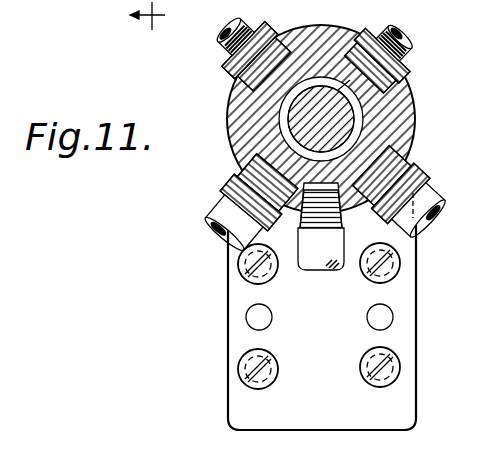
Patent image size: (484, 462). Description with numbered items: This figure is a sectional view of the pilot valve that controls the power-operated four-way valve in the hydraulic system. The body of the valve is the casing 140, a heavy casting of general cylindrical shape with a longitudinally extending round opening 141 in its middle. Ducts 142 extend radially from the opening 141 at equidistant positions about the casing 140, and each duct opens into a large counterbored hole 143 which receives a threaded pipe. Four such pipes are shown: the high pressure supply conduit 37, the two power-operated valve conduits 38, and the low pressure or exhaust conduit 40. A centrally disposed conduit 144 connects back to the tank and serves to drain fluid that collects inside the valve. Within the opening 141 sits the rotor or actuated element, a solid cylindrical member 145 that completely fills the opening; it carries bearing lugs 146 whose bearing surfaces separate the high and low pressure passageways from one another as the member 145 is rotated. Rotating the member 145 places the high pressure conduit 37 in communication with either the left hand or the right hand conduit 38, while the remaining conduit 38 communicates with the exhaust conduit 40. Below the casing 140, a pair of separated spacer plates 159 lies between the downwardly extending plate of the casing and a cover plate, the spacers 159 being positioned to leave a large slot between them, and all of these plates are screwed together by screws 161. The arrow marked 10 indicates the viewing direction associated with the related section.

The view direction arrow 10 is at (149, 15).
The high pressure supply conduit 37 is at (222, 48).
The power-operated valve conduits 38 is at (410, 50).
The low pressure or exhaust conduit 40 is at (416, 205).
The casing 140 is at (419, 116).
The round opening 141 is at (410, 93).
The ducts 142 is at (344, 85).
The counterbored holes 143 is at (283, 33).
The centrally disposed conduit 144 is at (326, 258).
The solid cylindrical member 145 is at (302, 125).
The bearing lugs 146 is at (358, 113).
The spacer plates 159 is at (235, 337).
The screws 161 is at (397, 263).